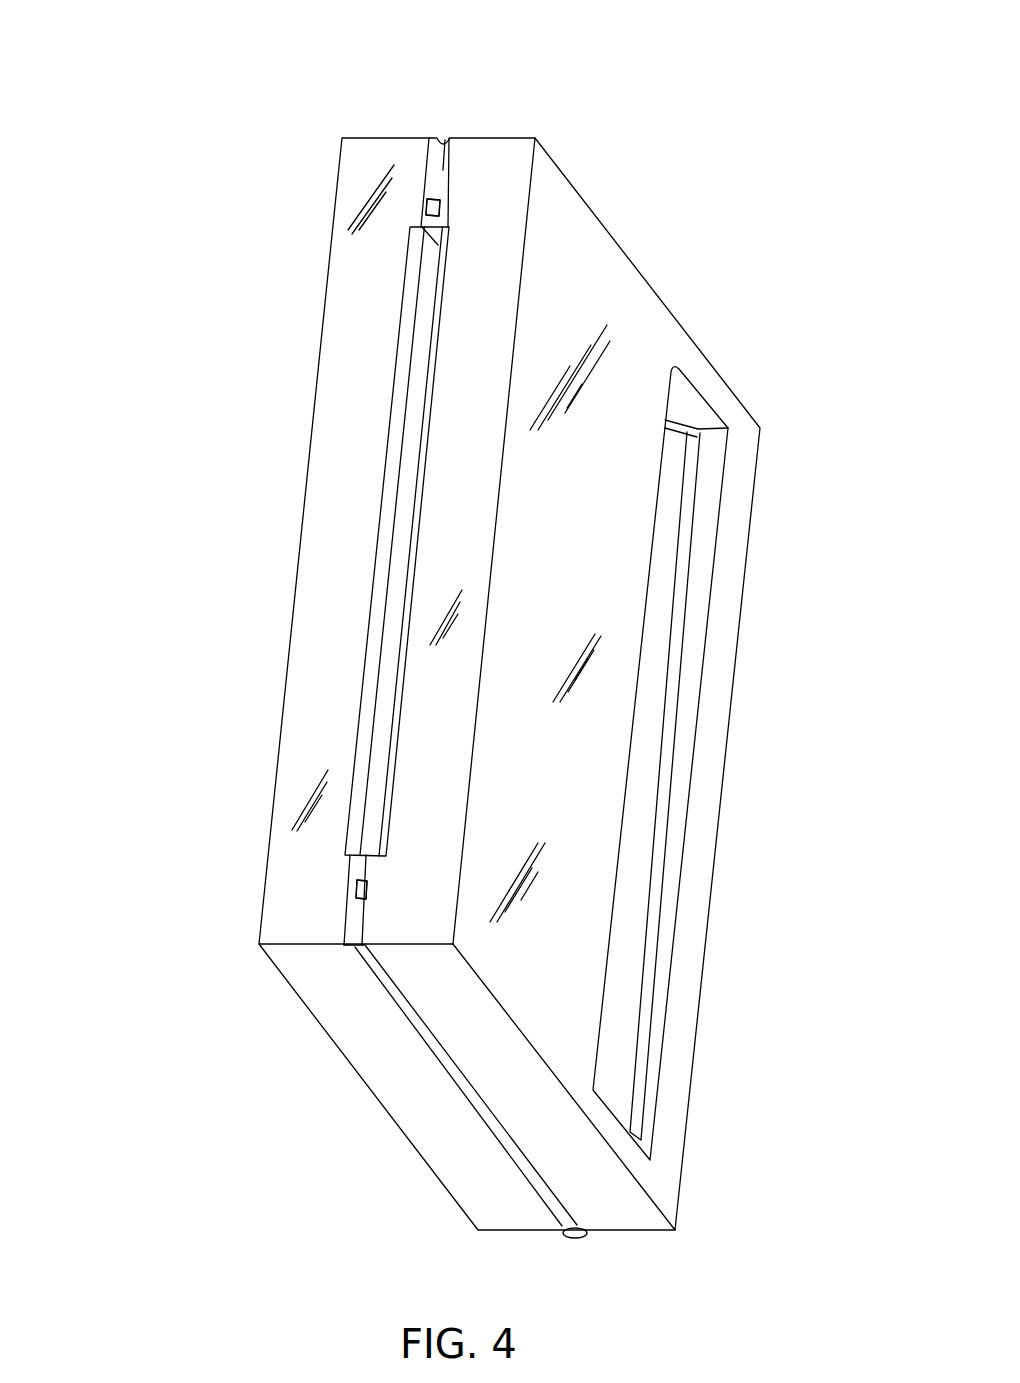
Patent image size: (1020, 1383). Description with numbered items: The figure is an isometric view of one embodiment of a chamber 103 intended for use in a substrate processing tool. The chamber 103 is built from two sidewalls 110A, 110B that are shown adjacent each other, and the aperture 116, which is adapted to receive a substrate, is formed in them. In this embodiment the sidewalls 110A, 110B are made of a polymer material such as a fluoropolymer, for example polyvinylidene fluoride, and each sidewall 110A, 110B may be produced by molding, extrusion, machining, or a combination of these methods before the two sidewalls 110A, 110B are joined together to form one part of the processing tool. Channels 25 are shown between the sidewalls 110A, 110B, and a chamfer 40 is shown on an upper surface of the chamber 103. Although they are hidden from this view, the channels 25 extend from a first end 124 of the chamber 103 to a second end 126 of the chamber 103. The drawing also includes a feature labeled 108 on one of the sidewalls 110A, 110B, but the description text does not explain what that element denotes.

The chamber 103 is at (148, 430).
The channels 25 is at (424, 186).
The chamfer 40 is at (441, 165).
The aperture 116 is at (428, 300).
The handle recess 108 is at (684, 432).
The sidewall 110A is at (597, 538).
The sidewall 110B is at (356, 651).
The first end 124 is at (358, 948).
The second end 126 is at (560, 1224).